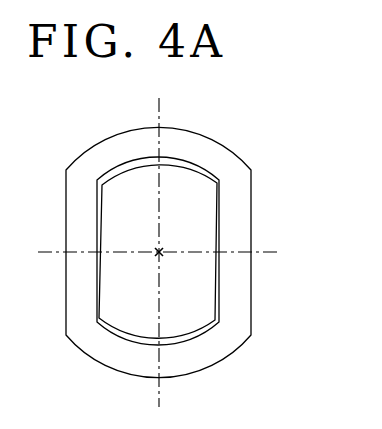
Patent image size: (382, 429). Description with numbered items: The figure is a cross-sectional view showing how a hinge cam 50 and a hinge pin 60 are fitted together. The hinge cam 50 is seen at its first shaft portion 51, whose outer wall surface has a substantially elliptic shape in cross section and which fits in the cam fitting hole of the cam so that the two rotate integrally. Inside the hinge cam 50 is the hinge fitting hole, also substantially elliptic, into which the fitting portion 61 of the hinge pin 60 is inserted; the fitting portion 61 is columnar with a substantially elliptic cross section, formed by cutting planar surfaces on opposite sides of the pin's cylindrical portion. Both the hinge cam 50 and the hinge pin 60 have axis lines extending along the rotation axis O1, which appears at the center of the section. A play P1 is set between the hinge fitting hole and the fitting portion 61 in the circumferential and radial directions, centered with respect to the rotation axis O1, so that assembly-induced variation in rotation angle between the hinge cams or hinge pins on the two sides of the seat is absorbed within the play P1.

The play P1 is at (192, 164).
The rotation axis O1 is at (162, 250).
The first shaft portion 51 is at (238, 164).
The hinge cam 50 is at (211, 252).
The fitting portion 61 is at (224, 219).
The hinge pin 60 is at (224, 219).